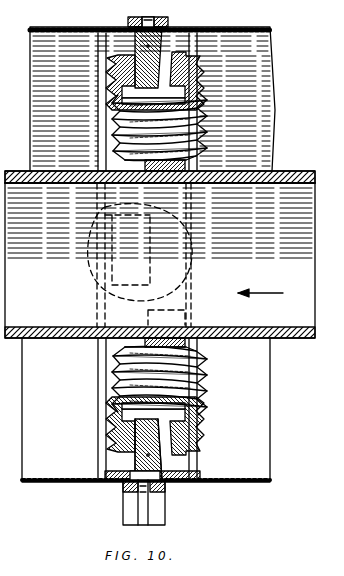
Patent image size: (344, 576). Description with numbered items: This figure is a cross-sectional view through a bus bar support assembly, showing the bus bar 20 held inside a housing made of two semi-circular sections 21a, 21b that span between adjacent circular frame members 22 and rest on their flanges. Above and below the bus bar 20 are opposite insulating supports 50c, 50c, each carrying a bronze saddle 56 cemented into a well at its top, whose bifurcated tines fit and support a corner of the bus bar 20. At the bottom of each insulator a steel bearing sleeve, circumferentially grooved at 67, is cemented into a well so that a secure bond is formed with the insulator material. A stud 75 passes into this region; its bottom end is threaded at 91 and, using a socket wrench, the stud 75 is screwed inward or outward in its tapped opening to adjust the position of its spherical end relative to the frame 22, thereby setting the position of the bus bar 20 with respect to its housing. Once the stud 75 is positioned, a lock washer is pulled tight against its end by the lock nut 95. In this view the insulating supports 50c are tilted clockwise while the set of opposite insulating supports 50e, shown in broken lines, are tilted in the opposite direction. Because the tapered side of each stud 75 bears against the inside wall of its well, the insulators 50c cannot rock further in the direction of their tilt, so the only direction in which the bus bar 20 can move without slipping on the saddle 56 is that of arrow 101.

The bus bar 20 is at (303, 340).
The housing section 21a is at (82, 26).
The housing section 21b is at (73, 484).
The circular frame member 22 is at (168, 22).
The insulating support 50c is at (110, 126).
The insulating support 50e is at (94, 297).
The saddle 56 is at (196, 159).
The circumferential groove 67 is at (198, 431).
The stud 75 is at (132, 462).
The threaded end 91 is at (133, 27).
The lock nut 95 is at (158, 18).
The arrow 101 is at (262, 281).